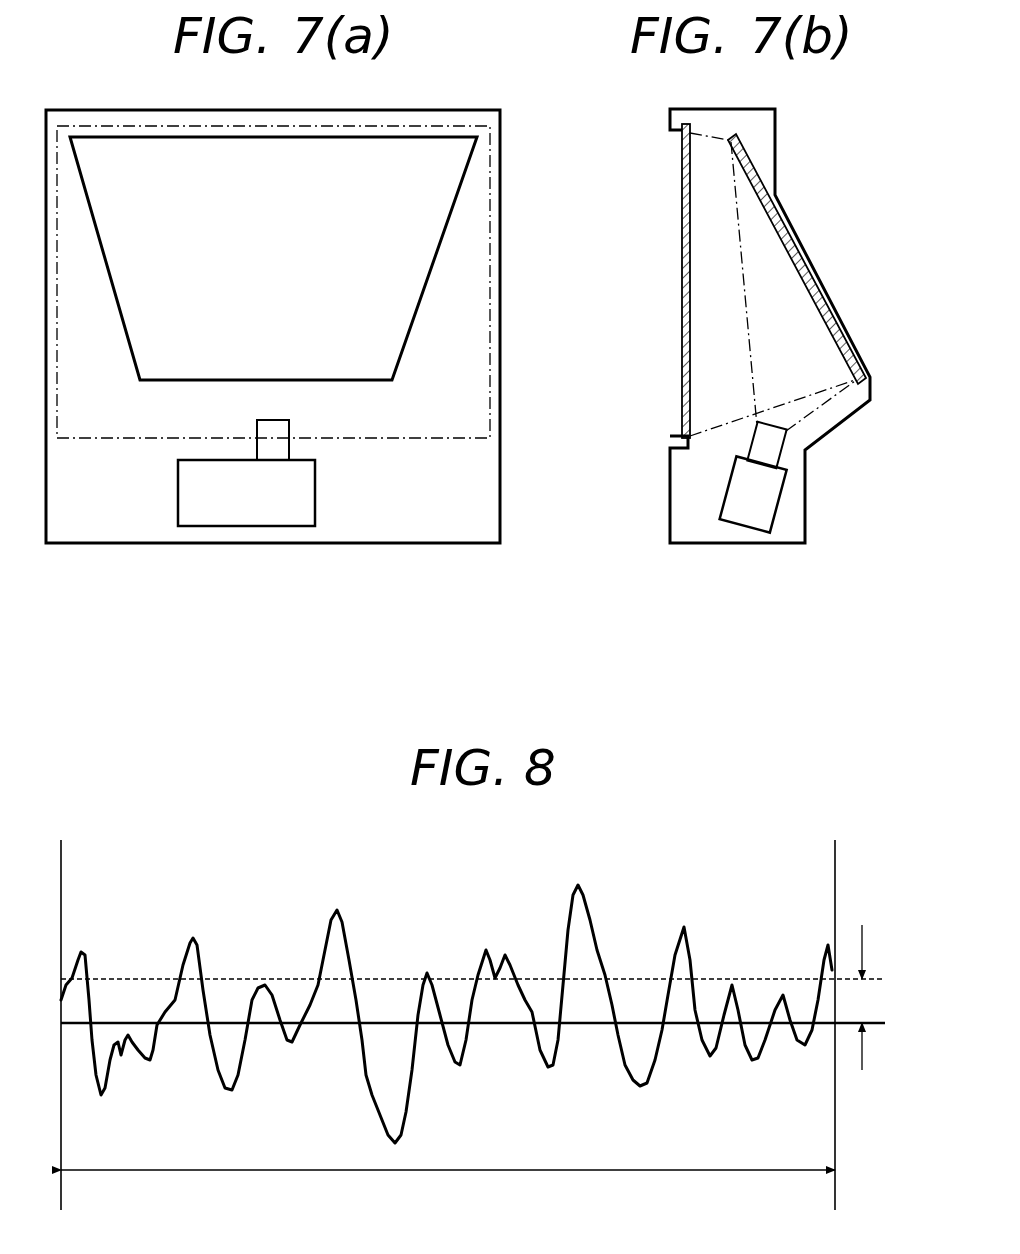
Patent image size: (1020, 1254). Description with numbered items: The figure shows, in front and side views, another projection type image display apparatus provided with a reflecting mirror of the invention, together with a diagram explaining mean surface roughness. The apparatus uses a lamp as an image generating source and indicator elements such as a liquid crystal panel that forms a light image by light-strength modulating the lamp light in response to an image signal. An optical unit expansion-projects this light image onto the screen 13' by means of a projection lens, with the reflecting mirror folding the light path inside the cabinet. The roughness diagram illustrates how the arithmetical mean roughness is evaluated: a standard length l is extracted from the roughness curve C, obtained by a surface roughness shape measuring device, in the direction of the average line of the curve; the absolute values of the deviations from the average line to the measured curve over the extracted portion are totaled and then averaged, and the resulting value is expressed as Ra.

The screen 13' is at (649, 281).
In FIG. 8, the roughness curve C is at (350, 932).
In FIG. 8, the arithmetical mean roughness Ra is at (882, 997).
In FIG. 8, the standard length l is at (448, 1156).